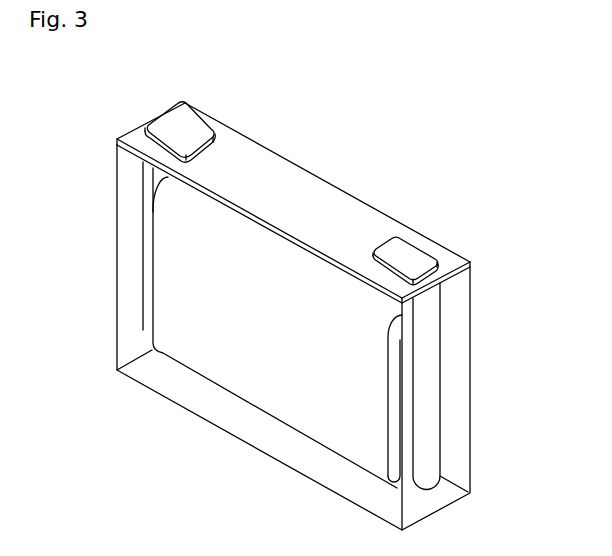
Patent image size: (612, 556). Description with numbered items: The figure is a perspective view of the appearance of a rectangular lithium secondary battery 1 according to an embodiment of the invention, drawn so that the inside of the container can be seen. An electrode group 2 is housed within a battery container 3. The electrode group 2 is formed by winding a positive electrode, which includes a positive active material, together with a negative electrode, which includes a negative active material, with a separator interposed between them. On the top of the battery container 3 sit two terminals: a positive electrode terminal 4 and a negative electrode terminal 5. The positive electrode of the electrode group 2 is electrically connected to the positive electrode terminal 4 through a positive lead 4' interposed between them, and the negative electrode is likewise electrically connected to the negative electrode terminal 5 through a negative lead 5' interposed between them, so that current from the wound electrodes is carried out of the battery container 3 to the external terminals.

The lithium secondary battery 1 is at (386, 171).
The electrode group 2 is at (252, 334).
The battery container 3 is at (117, 220).
The positive electrode terminal 4 is at (180, 113).
The negative electrode terminal 5 is at (405, 239).
The positive lead 4' is at (126, 226).
The negative lead 5' is at (444, 386).